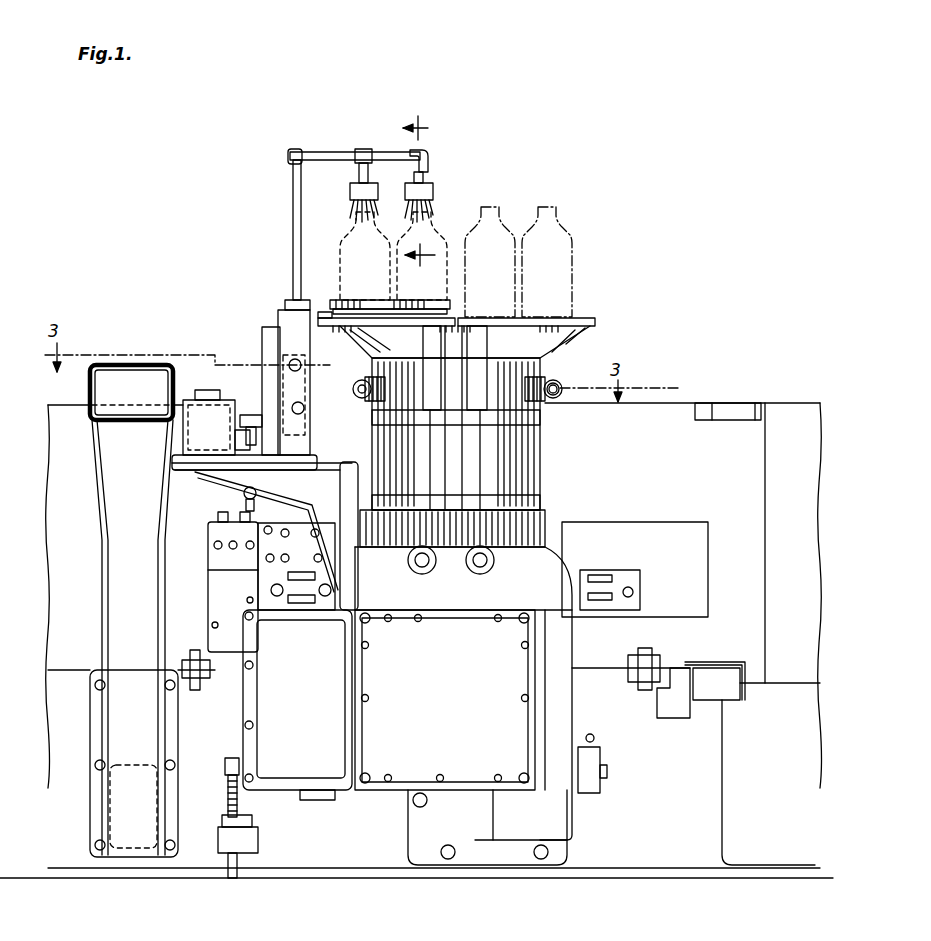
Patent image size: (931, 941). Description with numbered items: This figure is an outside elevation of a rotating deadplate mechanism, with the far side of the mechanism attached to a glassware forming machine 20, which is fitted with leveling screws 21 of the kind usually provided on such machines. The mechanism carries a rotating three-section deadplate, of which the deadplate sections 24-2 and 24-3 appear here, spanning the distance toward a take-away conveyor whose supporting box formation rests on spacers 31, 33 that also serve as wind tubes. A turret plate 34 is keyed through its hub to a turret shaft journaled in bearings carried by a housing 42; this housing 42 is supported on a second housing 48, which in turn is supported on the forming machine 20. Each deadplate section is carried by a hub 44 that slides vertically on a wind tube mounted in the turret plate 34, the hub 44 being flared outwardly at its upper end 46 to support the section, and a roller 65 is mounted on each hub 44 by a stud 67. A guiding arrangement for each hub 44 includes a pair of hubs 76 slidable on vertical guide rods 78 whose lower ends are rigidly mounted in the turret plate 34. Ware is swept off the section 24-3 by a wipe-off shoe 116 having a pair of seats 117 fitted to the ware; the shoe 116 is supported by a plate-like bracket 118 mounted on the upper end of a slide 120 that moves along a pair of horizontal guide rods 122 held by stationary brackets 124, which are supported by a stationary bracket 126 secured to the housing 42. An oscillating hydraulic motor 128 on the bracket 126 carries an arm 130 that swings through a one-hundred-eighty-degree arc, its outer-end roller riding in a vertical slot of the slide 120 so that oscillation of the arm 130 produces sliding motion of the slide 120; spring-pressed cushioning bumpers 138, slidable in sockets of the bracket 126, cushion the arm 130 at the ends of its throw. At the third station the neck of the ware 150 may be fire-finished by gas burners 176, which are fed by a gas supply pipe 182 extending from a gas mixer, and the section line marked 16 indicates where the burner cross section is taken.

The glassware forming machine 20 is at (808, 508).
The leveling screw 21 is at (248, 798).
The deadplate section 24-2 is at (593, 320).
The deadplate section 24-3 is at (320, 318).
The spacer 31 is at (105, 746).
The spacer 33 is at (112, 528).
The turret plate 34 is at (542, 526).
The housing 42 is at (535, 594).
The hub 44 is at (505, 395).
The flared upper end of hub 46 is at (548, 345).
The second housing 48 is at (418, 752).
The roller 65 is at (368, 398).
The stud 67 is at (565, 383).
The hub 76 is at (480, 470).
The guide rod 78 is at (462, 322).
The wipe-off shoe 116 is at (322, 300).
The seat 117 is at (432, 302).
The plate-like bracket 118 is at (305, 290).
The slide 120 is at (264, 343).
The horizontal guide rod 122 is at (303, 409).
The stationary bracket 124 is at (300, 364).
The stationary bracket 126 is at (285, 466).
The oscillating hydraulic motor 128 is at (222, 425).
The arm 130 is at (255, 418).
The cushioning bumper 138 is at (250, 445).
The ware 150 is at (435, 235).
The gas burner 176 is at (410, 188).
The gas supply pipe 182 is at (385, 156).
The section line 16 is at (428, 191).